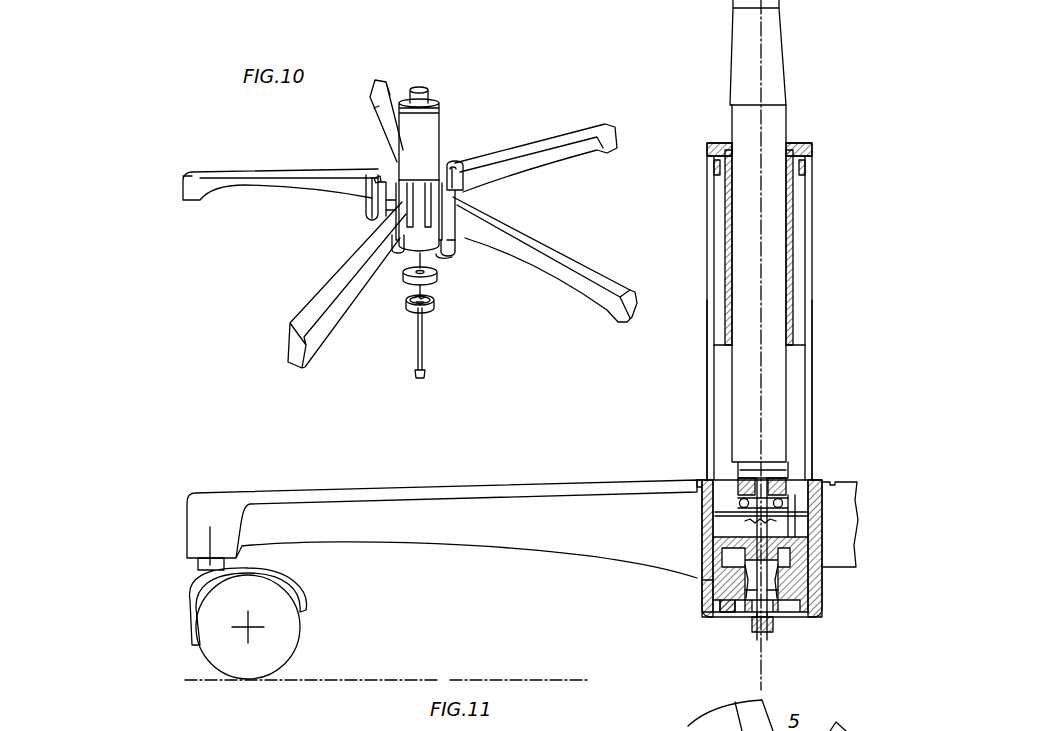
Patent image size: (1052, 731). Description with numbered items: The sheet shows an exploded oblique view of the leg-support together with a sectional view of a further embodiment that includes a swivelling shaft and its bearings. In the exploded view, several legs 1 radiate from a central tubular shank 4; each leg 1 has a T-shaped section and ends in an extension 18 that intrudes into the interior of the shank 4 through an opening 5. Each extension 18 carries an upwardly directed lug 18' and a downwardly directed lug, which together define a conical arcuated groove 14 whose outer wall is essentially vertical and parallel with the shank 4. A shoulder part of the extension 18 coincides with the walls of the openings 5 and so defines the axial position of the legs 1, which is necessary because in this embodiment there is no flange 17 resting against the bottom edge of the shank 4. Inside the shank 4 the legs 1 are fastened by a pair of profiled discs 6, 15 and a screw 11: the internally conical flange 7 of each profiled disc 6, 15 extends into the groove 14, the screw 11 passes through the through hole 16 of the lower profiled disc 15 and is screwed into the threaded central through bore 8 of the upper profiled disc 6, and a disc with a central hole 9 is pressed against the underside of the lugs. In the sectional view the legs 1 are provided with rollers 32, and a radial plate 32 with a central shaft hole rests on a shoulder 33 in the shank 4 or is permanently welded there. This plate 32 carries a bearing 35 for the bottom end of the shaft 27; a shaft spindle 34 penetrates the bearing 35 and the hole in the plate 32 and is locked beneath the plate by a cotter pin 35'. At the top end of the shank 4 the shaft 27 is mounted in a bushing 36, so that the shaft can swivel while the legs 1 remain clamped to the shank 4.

In FIG. 10, the leg 1 is at (240, 170).
In FIG. 11, the leg 1 is at (400, 490).
In FIG. 10, the shank 4 is at (435, 116).
In FIG. 11, the shank 4 is at (712, 353).
In FIG. 10, the opening 5 is at (400, 186).
In FIG. 11, the opening 5 is at (704, 602).
In FIG. 10, the profiled disc 6 is at (438, 279).
In FIG. 11, the profiled disc 6 is at (836, 486).
In FIG. 10, the conical flange 7 is at (436, 304).
In FIG. 11, the conical flange 7 is at (812, 548).
In FIG. 10, the threaded central through bore 8 is at (416, 271).
In FIG. 11, the threaded central through bore 8 is at (785, 572).
In FIG. 10, the central hole 9 is at (412, 298).
In FIG. 10, the screw 11 is at (424, 358).
In FIG. 11, the screw 11 is at (762, 642).
In FIG. 10, the conical arcuated groove 14 is at (452, 165).
In FIG. 11, the conical arcuated groove 14 is at (716, 614).
In FIG. 10, the profiled disc 15 is at (418, 310).
In FIG. 11, the profiled disc 15 is at (790, 612).
In FIG. 11, the through hole 16 is at (772, 630).
In FIG. 10, the flange 17 is at (452, 259).
In FIG. 10, the extension 18 is at (378, 195).
In FIG. 11, the extension 18 is at (704, 584).
In FIG. 10, the upwardly directed lug 18′ is at (379, 180).
In FIG. 11, the upwardly directed lug 18′ is at (772, 562).
In FIG. 10, the shaft 27 is at (426, 93).
In FIG. 11, the shaft 27 is at (745, 36).
In FIG. 11, the roller / radial plate 32 is at (276, 620).
In FIG. 11, the shoulder 33 is at (742, 505).
In FIG. 11, the shaft spindle 34 is at (752, 520).
In FIG. 11, the bearing 35 is at (790, 500).
In FIG. 11, the cotter pin 35′ is at (702, 545).
In FIG. 11, the bushing 36 is at (727, 230).